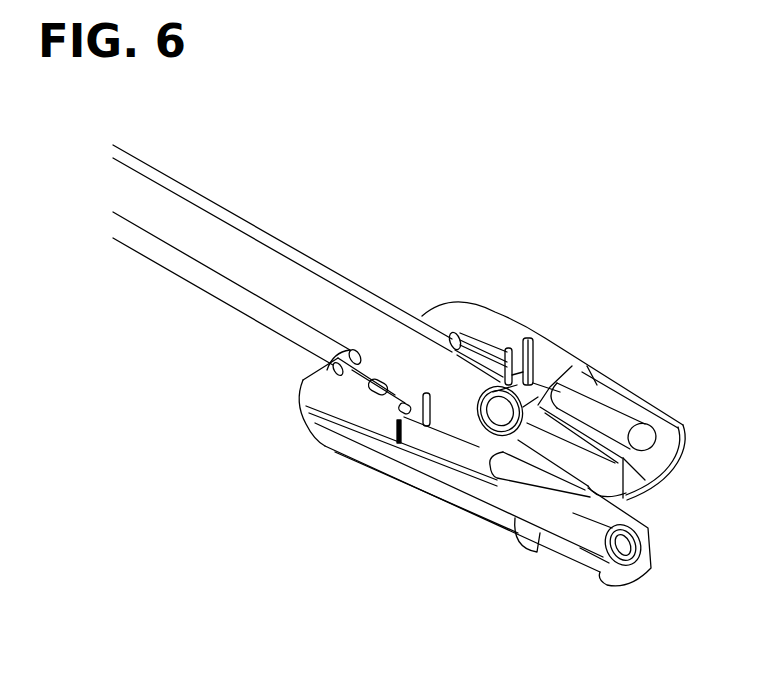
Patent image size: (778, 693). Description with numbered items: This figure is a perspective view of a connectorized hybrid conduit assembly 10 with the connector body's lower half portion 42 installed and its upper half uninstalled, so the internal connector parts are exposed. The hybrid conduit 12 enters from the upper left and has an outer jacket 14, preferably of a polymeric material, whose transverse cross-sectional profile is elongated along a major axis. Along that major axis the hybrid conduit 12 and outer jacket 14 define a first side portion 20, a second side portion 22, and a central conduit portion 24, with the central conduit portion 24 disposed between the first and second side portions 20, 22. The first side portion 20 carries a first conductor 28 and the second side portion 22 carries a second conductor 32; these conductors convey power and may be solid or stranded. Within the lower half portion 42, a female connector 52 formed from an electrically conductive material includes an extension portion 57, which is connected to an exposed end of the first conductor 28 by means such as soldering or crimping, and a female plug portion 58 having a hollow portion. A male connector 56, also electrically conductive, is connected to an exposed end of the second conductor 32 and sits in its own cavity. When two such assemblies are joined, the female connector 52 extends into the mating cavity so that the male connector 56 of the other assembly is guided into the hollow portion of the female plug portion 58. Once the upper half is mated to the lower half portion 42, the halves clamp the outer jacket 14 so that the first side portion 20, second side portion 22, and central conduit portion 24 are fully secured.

The connectorized hybrid conduit assembly 10 is at (592, 277).
The hybrid conduit 12 is at (135, 197).
The outer jacket 14 is at (185, 218).
The first side portion 20 is at (265, 313).
The second side portion 22 is at (308, 258).
The central conduit portion 24 is at (235, 258).
The first conductor 28 is at (390, 400).
The second conductor 32 is at (468, 347).
The lower half portion 42 is at (332, 400).
The female connector 52 is at (610, 524).
The male connector 56 is at (600, 410).
The extension portion 57 is at (437, 455).
The female plug portion 58 is at (587, 525).